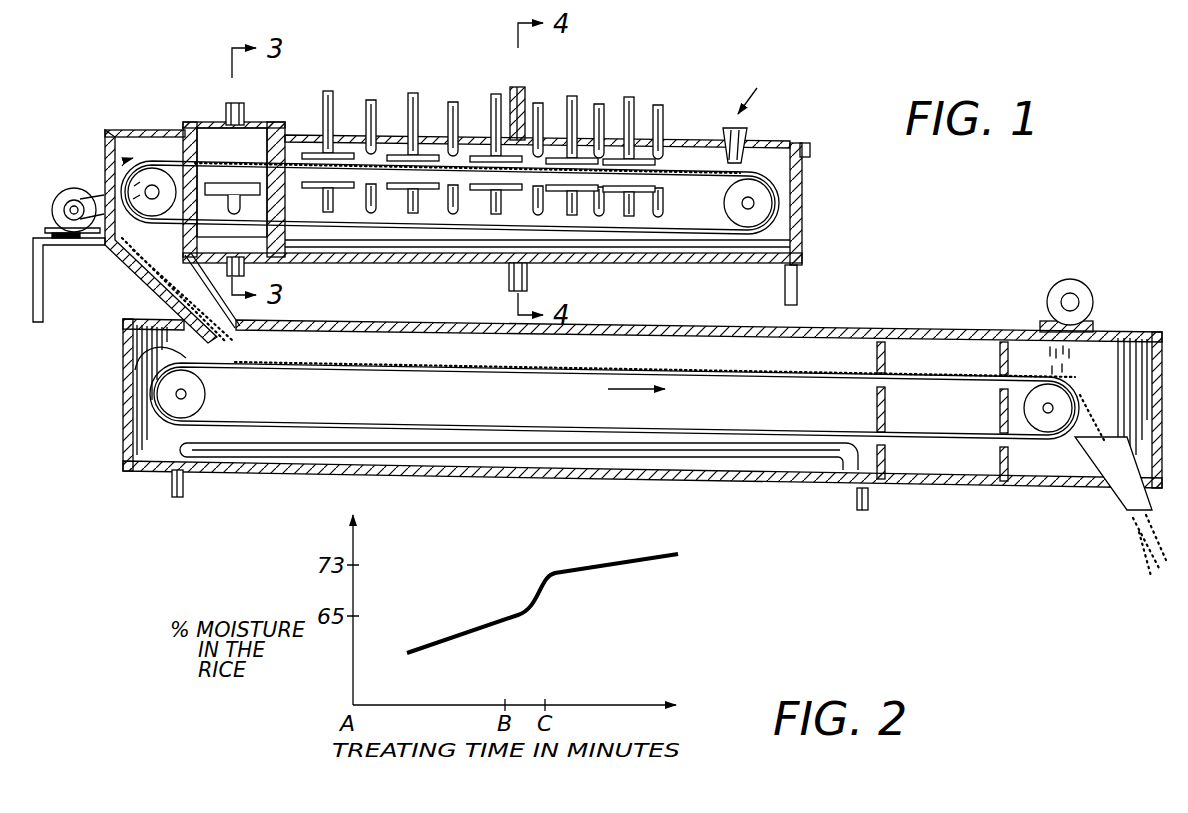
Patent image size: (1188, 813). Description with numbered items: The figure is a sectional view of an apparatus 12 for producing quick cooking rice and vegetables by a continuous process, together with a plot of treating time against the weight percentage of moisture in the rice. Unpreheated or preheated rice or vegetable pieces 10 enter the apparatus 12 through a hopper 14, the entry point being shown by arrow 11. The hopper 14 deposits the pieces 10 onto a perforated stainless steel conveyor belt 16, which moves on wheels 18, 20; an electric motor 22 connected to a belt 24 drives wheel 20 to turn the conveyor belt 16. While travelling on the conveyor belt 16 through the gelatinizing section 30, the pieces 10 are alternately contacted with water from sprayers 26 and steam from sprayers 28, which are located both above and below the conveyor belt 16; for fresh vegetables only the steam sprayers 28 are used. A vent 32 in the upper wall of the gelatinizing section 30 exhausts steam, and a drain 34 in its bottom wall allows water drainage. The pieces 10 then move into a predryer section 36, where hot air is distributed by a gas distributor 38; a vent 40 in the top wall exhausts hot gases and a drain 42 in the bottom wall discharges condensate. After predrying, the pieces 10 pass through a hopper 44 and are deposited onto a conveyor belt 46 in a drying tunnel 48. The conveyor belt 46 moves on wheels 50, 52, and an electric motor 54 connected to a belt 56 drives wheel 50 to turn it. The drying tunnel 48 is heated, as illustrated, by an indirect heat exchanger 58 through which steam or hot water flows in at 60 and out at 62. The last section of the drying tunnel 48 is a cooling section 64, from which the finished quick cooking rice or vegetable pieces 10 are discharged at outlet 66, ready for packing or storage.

The rice or vegetable pieces 10 is at (120, 249).
The arrow 11 is at (760, 87).
The apparatus 12 is at (850, 200).
The hopper 14 is at (743, 135).
The conveyor belt 16 is at (758, 173).
The wheel 18 is at (760, 207).
The wheel 20 is at (155, 182).
The electric motor 22 is at (62, 205).
The belt 24 is at (98, 193).
The water sprayers 26 is at (662, 100).
The steam sprayers 28 is at (641, 72).
The gelatinizing section 30 is at (426, 130).
The vent 32 is at (512, 90).
The drain 34 is at (528, 274).
The predryer section 36 is at (260, 127).
The gas distributor 38 is at (242, 188).
The vent 40 is at (228, 106).
The drain 42 is at (246, 268).
The hopper 44 is at (170, 263).
The conveyor belt 46 is at (157, 350).
The drying tunnel 48 is at (150, 470).
The wheel 50 is at (1042, 408).
The wheel 52 is at (176, 394).
The electric motor 54 is at (1076, 292).
The belt 56 is at (1052, 318).
The indirect heat exchanger 58 is at (541, 456).
The inlet 60 is at (177, 548).
The outlet 62 is at (863, 527).
The cooling section 64 is at (958, 332).
The outlet 66 is at (1105, 455).